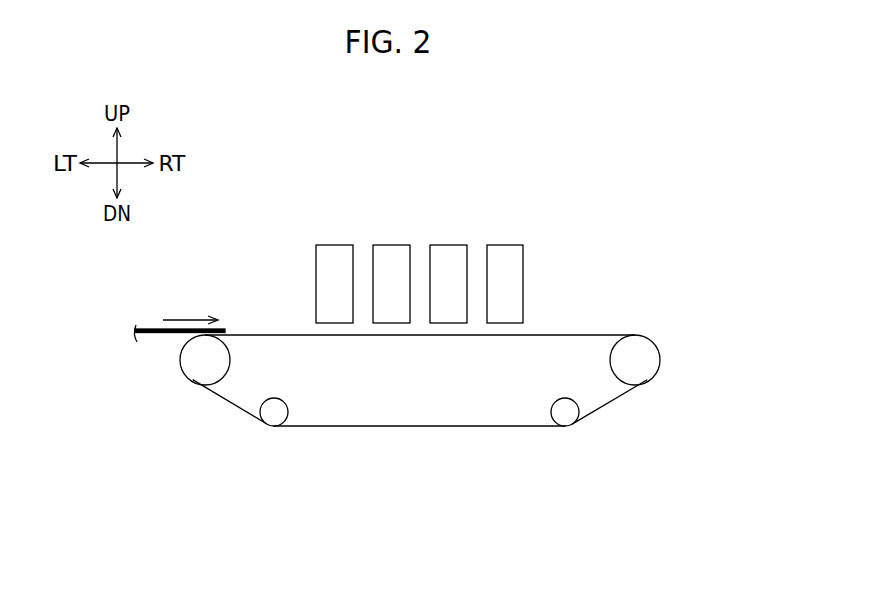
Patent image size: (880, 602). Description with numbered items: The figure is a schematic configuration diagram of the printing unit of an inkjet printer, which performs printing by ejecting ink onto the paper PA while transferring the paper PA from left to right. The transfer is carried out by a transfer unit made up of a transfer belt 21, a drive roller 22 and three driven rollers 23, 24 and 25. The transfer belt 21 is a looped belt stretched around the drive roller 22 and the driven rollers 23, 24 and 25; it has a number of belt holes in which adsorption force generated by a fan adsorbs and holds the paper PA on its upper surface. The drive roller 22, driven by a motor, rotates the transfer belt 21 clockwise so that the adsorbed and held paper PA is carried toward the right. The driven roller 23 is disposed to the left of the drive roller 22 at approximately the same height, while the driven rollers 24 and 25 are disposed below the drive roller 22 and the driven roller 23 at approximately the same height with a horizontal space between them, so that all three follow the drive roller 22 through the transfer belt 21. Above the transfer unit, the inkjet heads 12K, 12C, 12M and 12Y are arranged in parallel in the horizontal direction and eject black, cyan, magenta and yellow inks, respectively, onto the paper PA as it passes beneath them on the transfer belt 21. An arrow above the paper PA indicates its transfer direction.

The inkjet head 12K is at (332, 245).
The inkjet head 12C is at (389, 245).
The inkjet head 12M is at (446, 245).
The inkjet head 12Y is at (502, 245).
The transfer belt 21 is at (567, 333).
The drive roller 22 is at (658, 358).
The driven roller 23 is at (185, 360).
The driven roller 24 is at (274, 427).
The driven roller 25 is at (567, 427).
The paper PA is at (157, 328).